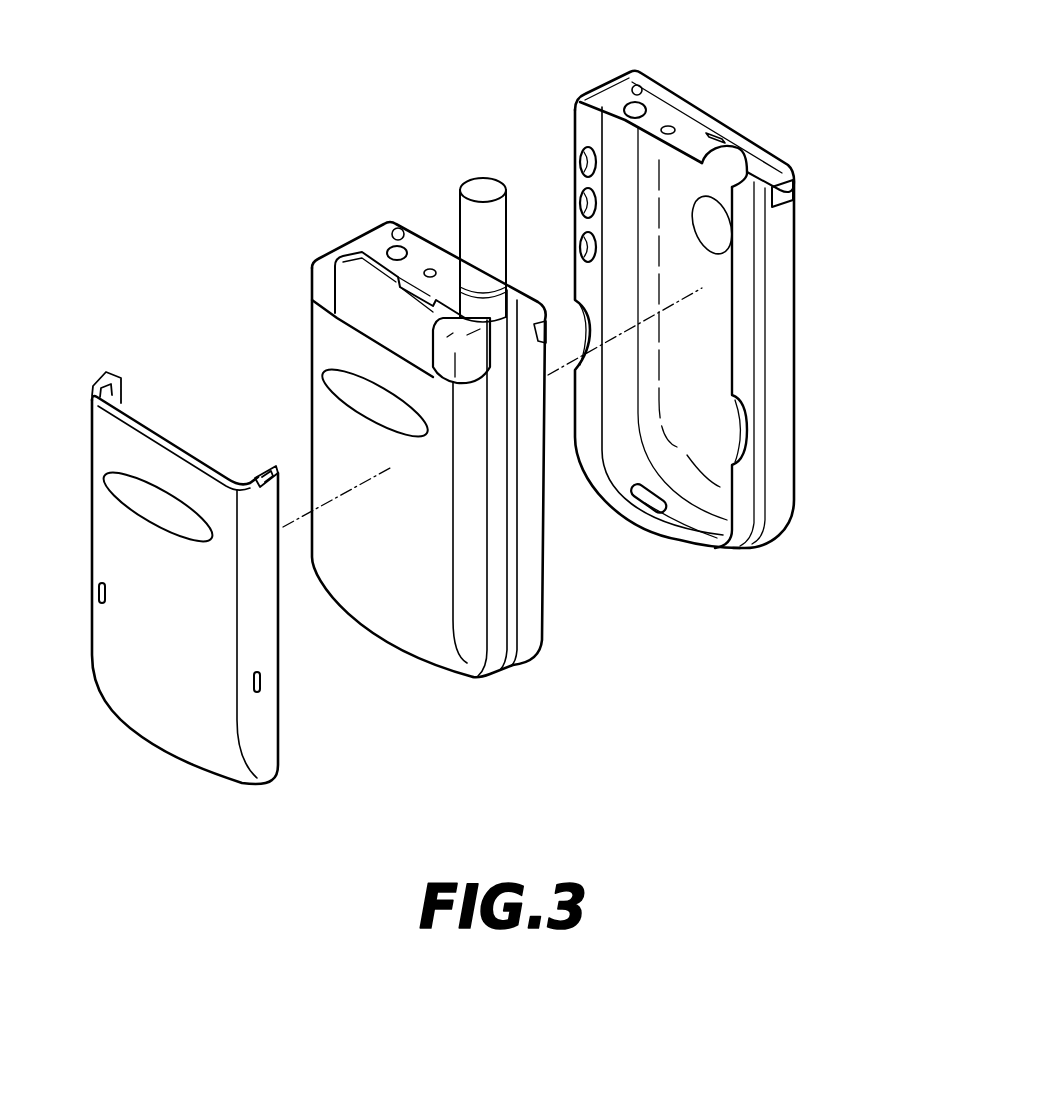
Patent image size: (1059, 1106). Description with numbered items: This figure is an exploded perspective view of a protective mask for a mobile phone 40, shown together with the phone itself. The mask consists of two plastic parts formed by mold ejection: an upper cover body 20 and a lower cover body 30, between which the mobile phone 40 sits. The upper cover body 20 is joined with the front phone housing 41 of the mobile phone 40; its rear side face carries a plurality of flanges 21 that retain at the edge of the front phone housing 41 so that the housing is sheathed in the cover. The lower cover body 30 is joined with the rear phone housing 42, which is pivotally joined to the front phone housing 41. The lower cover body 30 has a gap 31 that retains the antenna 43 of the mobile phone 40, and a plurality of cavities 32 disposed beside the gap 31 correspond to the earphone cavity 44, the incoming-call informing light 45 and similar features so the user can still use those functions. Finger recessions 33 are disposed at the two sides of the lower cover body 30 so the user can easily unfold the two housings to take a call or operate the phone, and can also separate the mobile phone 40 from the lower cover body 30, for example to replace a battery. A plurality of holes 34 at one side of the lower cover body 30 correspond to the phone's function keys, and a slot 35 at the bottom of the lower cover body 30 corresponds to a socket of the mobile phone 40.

The upper cover body 20 is at (153, 765).
The flanges 21 is at (120, 380).
The lower cover body 30 is at (690, 354).
The gap 31 is at (750, 143).
The cavities 32 is at (670, 126).
The finger recessions 33 is at (580, 328).
The holes 34 is at (580, 247).
The slot 35 is at (660, 505).
The mobile phone 40 is at (477, 433).
The front phone housing 41 is at (393, 625).
The rear phone housing 42 is at (545, 577).
The antenna 43 is at (487, 183).
The earphone cavity 44 is at (392, 249).
The incoming-call informing light 45 is at (401, 227).